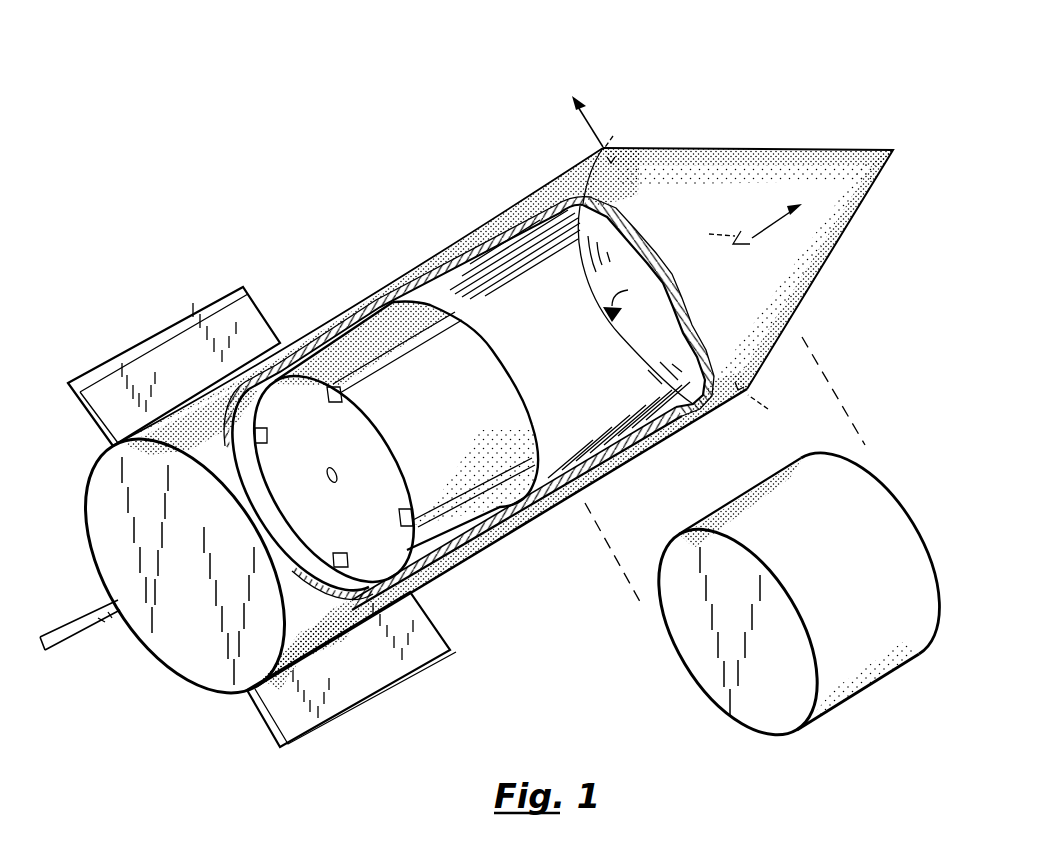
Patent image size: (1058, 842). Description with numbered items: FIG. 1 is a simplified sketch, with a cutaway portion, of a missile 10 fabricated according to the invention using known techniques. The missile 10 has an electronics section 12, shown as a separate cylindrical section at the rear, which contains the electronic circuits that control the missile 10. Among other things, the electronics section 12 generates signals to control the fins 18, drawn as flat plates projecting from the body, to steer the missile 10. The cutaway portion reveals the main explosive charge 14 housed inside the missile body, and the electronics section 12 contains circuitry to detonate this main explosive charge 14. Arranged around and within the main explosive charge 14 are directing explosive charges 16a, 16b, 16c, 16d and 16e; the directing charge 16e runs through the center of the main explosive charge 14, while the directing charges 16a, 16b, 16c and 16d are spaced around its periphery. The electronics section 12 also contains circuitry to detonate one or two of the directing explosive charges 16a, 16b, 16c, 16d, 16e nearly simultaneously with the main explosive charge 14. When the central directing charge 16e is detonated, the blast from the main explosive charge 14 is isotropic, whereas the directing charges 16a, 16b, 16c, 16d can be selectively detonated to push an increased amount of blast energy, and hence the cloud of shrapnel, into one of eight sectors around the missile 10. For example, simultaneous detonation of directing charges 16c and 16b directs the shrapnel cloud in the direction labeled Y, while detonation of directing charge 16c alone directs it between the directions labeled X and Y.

The missile 10 is at (384, 138).
The electronics section 12 is at (913, 530).
The main explosive charge 14 is at (379, 455).
The directing explosive charge 16a is at (339, 403).
The directing explosive charge 16b is at (400, 514).
The directing explosive charge 16c is at (338, 553).
The directing explosive charge 16d is at (268, 437).
The directing explosive charge 16e is at (329, 483).
The fins 18 is at (187, 313).